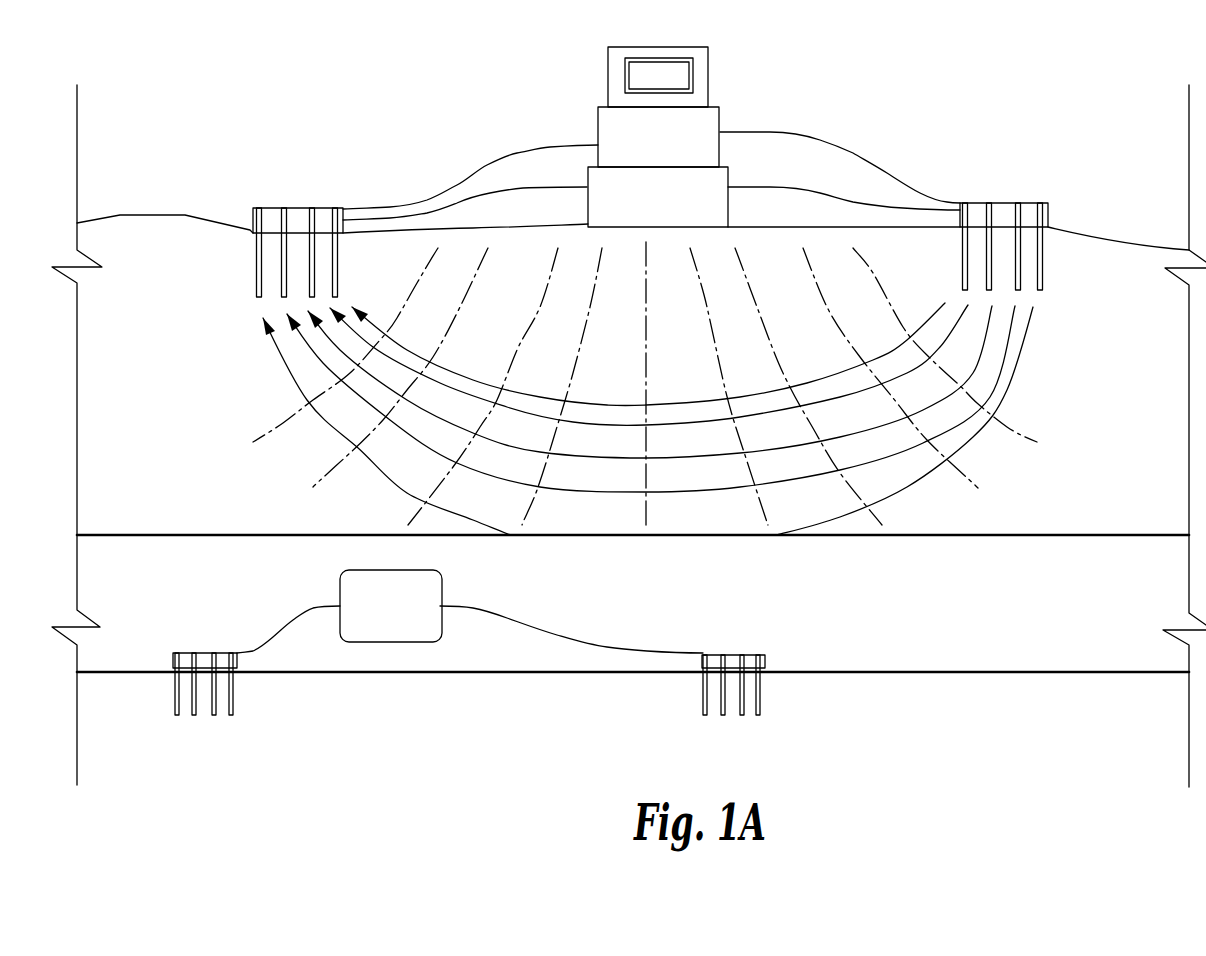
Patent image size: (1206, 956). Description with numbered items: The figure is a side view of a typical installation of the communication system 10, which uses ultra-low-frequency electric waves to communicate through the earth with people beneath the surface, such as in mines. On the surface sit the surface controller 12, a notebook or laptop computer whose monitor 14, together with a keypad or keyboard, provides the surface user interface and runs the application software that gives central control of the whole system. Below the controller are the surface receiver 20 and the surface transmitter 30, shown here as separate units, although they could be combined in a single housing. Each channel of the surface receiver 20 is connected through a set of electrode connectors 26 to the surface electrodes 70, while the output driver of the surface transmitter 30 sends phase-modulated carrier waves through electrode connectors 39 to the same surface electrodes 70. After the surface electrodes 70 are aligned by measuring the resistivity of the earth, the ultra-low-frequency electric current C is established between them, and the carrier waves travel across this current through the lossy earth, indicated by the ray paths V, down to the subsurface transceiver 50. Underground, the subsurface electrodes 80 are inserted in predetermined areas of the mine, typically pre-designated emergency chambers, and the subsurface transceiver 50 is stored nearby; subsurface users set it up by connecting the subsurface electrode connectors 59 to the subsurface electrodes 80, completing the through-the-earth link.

The communication system 10 is at (500, 72).
The surface controller 12 is at (702, 73).
The monitor 14 is at (638, 80).
The surface receiver 20 is at (598, 132).
The surface transmitter 30 is at (728, 207).
The electrode connectors 26 is at (517, 155).
The electrode connectors 39 is at (458, 207).
The surface electrodes 70 is at (280, 208).
The subsurface electrodes 80 is at (203, 653).
The subsurface transceiver 50 is at (347, 585).
The subsurface electrode connectors 59 is at (290, 617).
The velocity ray paths V is at (585, 342).
The ultra-low-frequency electric current C is at (620, 403).